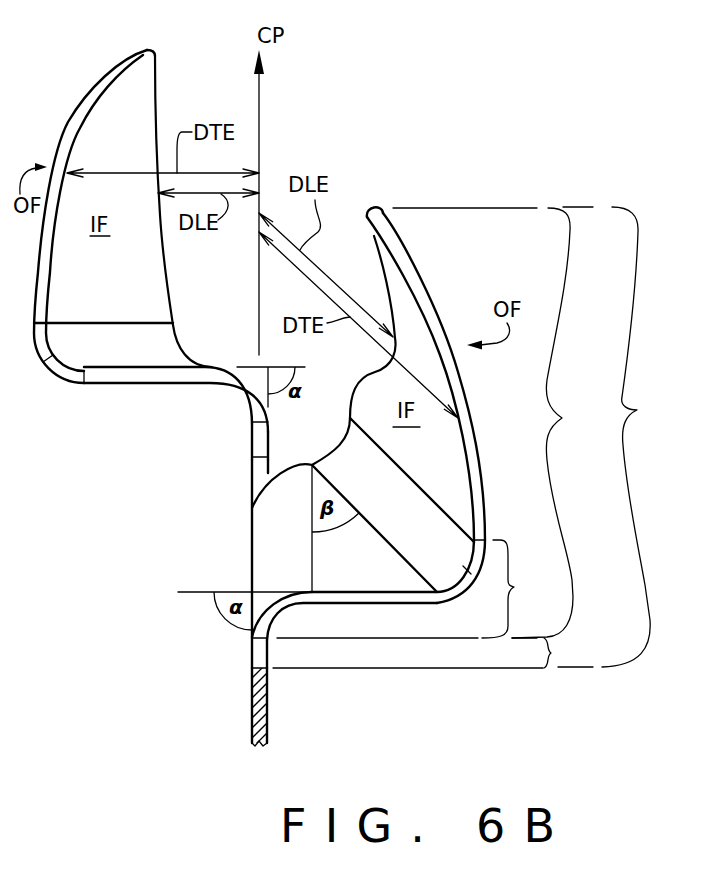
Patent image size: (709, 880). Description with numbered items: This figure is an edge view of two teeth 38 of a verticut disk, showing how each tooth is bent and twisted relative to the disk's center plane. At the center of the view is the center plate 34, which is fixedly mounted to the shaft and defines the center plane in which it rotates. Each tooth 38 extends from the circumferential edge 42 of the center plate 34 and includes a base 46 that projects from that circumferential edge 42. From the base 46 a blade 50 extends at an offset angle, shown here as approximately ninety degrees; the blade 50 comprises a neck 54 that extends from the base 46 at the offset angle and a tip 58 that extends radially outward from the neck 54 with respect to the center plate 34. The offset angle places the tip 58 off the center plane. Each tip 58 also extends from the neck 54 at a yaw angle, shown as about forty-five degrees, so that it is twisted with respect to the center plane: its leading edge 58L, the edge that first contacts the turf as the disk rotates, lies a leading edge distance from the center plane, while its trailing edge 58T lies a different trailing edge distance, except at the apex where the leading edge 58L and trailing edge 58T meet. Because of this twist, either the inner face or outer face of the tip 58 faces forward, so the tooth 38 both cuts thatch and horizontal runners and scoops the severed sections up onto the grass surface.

The center plate 34 is at (260, 697).
The tooth 38 is at (55, 124).
The circumferential edge 42 is at (260, 472).
The base 46 is at (260, 440).
The blade 50 is at (454, 423).
The neck 54 is at (125, 354).
The tip 58 is at (82, 268).
The trailing edge 58T is at (96, 78).
The leading edge 58L is at (167, 266).